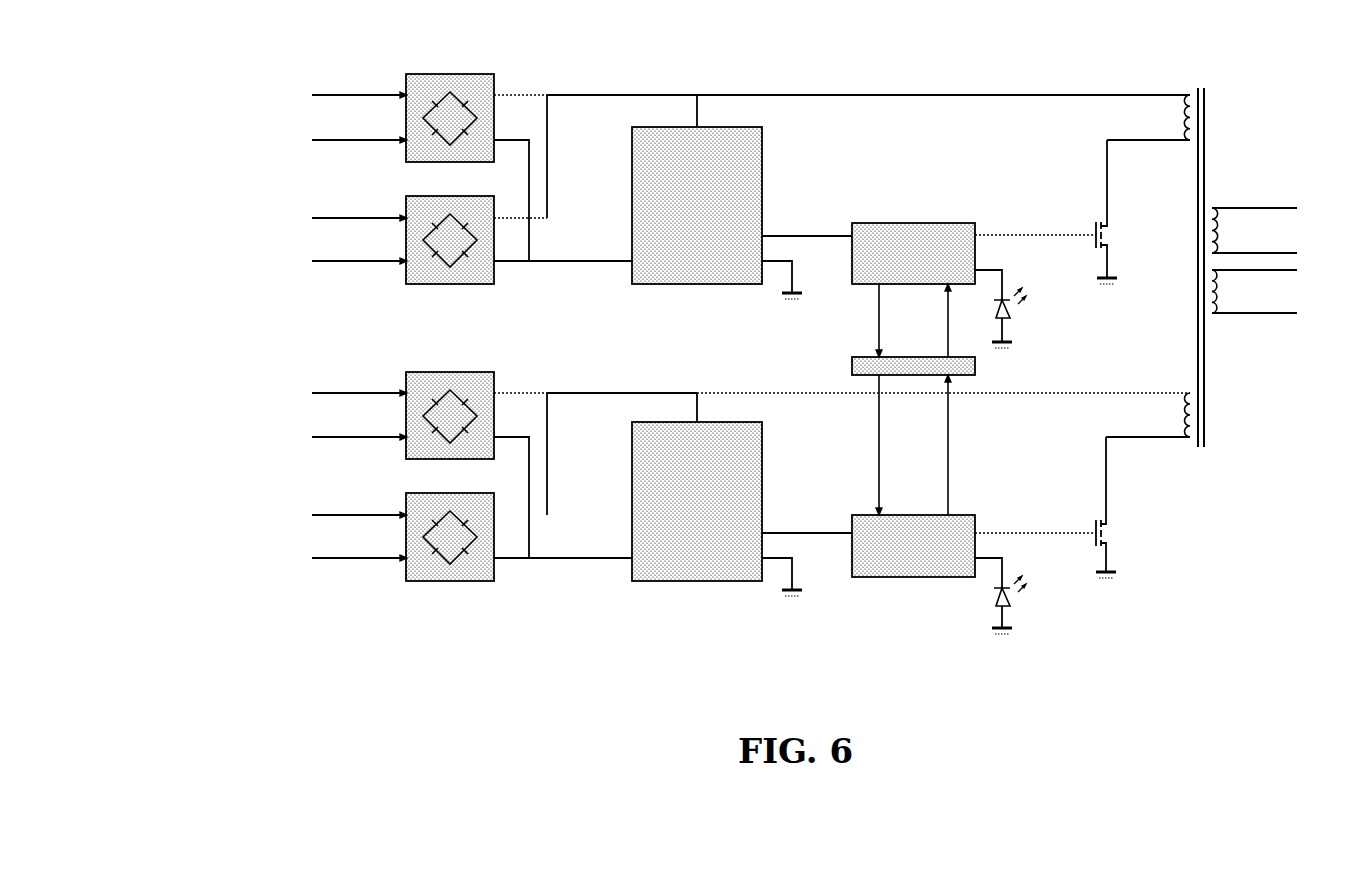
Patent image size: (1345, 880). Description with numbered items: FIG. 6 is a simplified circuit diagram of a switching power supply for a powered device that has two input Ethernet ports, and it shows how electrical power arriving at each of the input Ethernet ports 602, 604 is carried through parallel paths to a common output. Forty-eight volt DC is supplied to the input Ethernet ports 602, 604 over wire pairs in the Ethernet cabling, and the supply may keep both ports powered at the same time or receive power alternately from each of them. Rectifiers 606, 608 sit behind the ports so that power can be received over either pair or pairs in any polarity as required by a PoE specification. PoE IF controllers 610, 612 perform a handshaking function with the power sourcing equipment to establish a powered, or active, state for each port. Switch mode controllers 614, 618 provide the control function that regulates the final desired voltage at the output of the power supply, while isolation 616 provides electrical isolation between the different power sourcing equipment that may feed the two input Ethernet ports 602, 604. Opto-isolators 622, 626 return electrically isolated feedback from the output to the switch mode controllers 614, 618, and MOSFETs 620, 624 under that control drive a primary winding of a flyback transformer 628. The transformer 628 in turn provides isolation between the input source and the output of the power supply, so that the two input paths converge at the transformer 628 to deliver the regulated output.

The input Ethernet port 602 is at (288, 178).
The input Ethernet port 604 is at (288, 475).
The rectifier 606 is at (407, 196).
The rectifier 608 is at (407, 493).
The PoE IF controller 610 is at (742, 213).
The PoE IF controller 612 is at (742, 509).
The switch mode controller 614 is at (883, 223).
The isolation 616 is at (852, 365).
The switch mode controller 618 is at (900, 578).
The MOSFET 620 is at (1095, 222).
The opto-isolator 622 is at (1002, 288).
The MOSFET 624 is at (1095, 520).
The opto-isolator 626 is at (1002, 577).
The flyback transformer 628 is at (1204, 88).